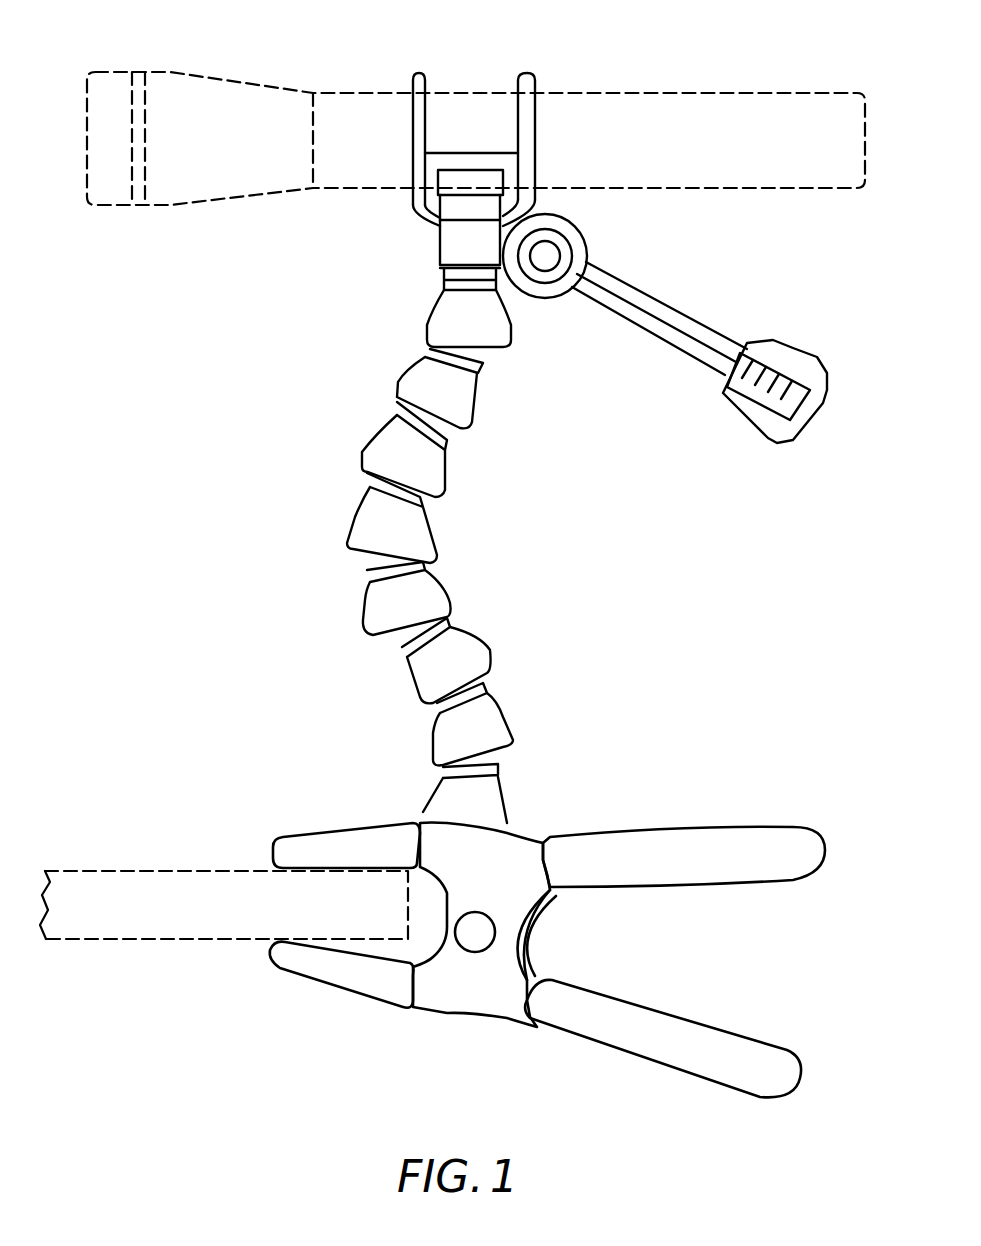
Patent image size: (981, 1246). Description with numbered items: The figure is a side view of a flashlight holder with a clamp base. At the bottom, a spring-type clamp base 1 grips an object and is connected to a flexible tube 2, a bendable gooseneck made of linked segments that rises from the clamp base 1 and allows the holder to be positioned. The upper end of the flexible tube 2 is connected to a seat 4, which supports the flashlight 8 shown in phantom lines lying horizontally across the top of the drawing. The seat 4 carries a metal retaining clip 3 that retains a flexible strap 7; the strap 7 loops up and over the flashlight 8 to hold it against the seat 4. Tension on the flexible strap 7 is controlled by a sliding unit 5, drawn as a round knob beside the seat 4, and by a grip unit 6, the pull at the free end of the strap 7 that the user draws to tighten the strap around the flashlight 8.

The clamp base 1 is at (756, 824).
The flexible tube 2 is at (336, 541).
The retaining clip 3 is at (462, 248).
The seat 4 is at (438, 163).
The sliding unit 5 is at (604, 240).
The grip unit 6 is at (768, 428).
The flexible strap 7 is at (658, 332).
The flashlight 8 is at (787, 163).